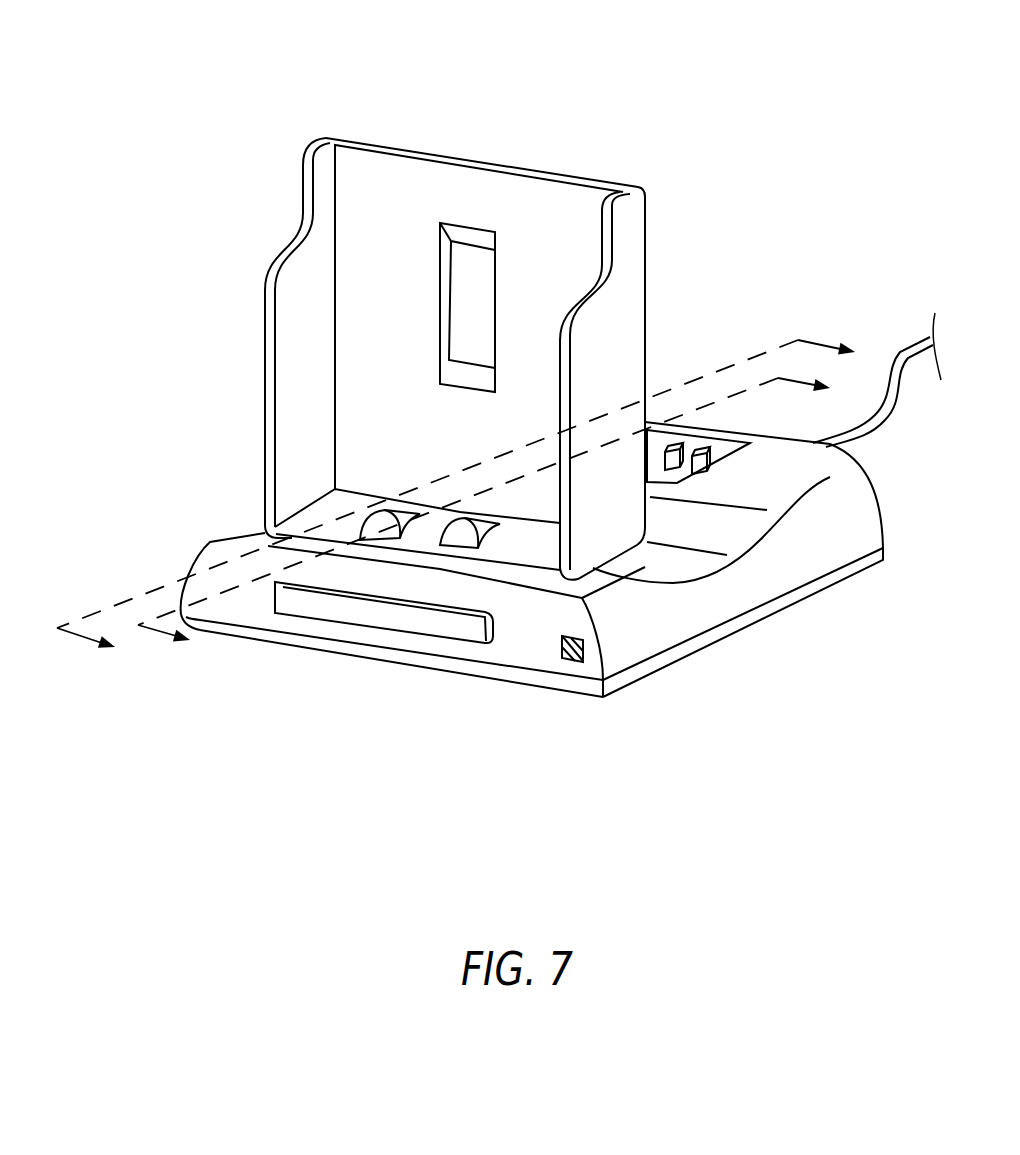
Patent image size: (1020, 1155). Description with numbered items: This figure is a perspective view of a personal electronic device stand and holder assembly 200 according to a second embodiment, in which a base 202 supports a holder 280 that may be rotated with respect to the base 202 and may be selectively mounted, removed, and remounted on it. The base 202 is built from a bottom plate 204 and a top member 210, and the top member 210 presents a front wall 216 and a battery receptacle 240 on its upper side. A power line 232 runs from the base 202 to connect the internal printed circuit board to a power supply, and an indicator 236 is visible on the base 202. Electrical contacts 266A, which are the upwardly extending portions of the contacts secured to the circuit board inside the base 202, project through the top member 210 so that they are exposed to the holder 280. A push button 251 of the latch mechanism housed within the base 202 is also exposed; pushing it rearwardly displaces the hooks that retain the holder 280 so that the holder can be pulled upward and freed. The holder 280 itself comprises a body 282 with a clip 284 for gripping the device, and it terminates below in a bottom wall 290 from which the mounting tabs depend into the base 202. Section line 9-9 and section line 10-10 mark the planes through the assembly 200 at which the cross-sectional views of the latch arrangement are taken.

The assembly 200 is at (502, 115).
The base 202 is at (772, 630).
The bottom plate 204 is at (710, 640).
The top member 210 is at (270, 540).
The front wall 216 is at (462, 650).
The power line 232 is at (907, 357).
The indicator 236 is at (560, 652).
The battery receptacle 240 is at (680, 360).
The push button 251 is at (398, 625).
The electrical contacts 266A is at (455, 518).
The holder 280 is at (682, 245).
The body 282 is at (300, 268).
The clip 284 is at (482, 285).
The bottom wall 290 is at (350, 513).
The section line 9- 9 is at (463, 499).
The section line 10- 10 is at (501, 521).